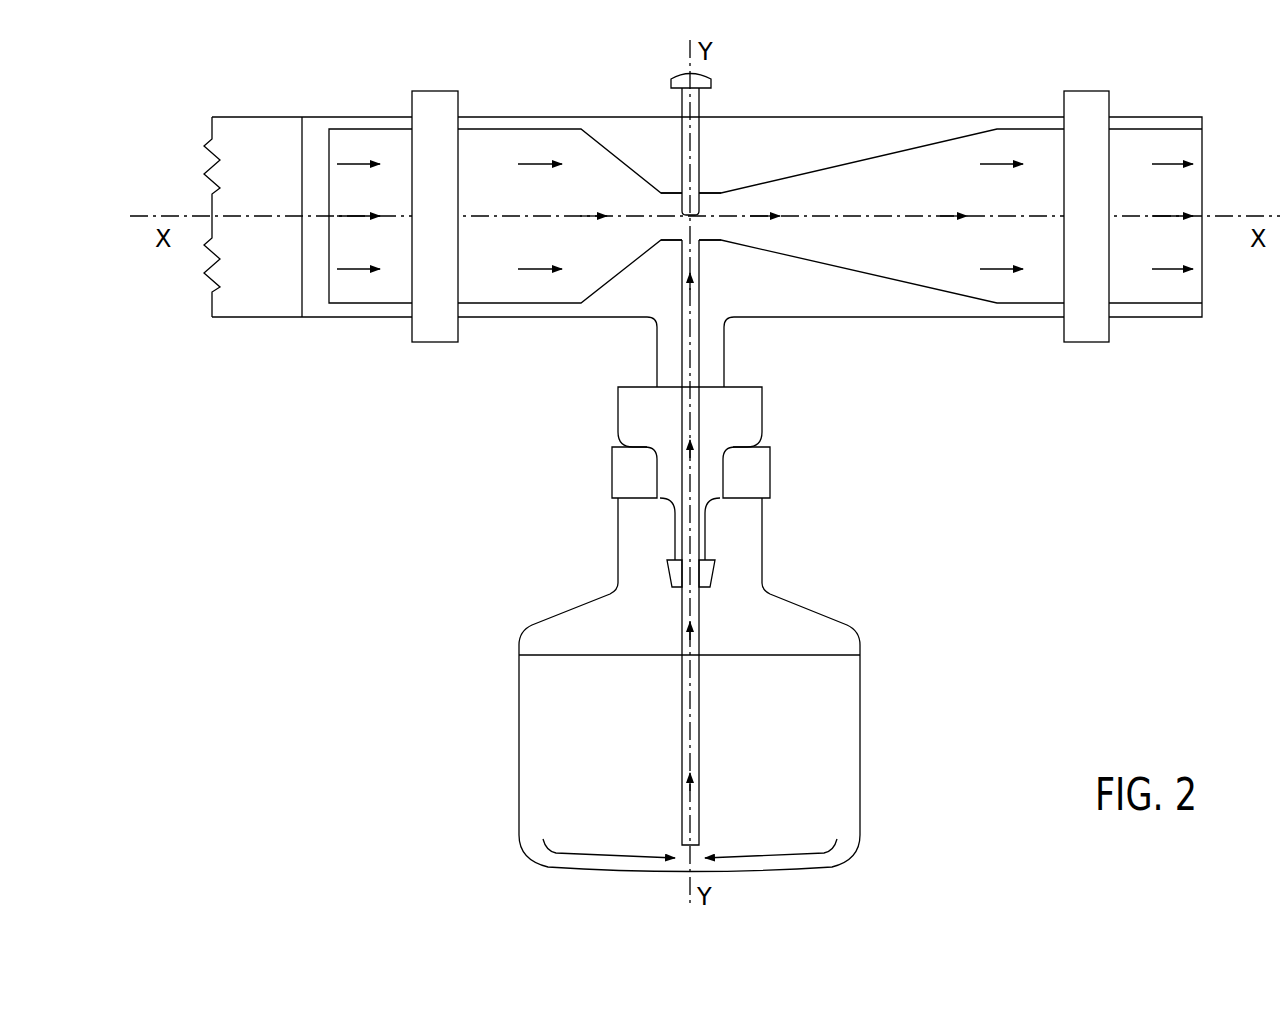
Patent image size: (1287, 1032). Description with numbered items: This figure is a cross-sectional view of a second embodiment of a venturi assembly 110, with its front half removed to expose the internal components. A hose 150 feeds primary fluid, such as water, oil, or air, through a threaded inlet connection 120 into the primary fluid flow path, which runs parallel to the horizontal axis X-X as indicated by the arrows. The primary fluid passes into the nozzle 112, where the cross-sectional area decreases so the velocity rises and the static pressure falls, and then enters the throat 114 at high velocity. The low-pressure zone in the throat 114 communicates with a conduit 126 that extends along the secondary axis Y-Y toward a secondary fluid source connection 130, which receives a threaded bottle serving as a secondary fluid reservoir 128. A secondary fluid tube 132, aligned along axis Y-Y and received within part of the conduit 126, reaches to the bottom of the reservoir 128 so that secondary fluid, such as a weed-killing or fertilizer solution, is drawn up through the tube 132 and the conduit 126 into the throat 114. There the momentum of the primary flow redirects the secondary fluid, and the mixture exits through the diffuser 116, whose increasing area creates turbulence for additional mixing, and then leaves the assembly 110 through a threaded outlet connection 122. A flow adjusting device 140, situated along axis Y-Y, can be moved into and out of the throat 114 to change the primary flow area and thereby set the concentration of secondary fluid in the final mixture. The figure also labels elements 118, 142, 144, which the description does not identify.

The venturi assembly 110 is at (671, 195).
The nozzle 112 is at (587, 158).
The throat 114 is at (677, 224).
The diffuser 116 is at (883, 180).
The pipe body 118 is at (743, 115).
The threaded inlet connection 120 is at (357, 115).
The threaded outlet connection 122 is at (1153, 115).
The conduit 126 is at (704, 285).
The secondary fluid reservoir 128 is at (884, 640).
The secondary fluid source connection 130 is at (726, 479).
The secondary fluid tube 132 is at (700, 703).
The flow adjusting device 140 is at (709, 127).
The plug cap 142 is at (683, 76).
The plug body 144 is at (702, 152).
The hose 150 is at (235, 138).